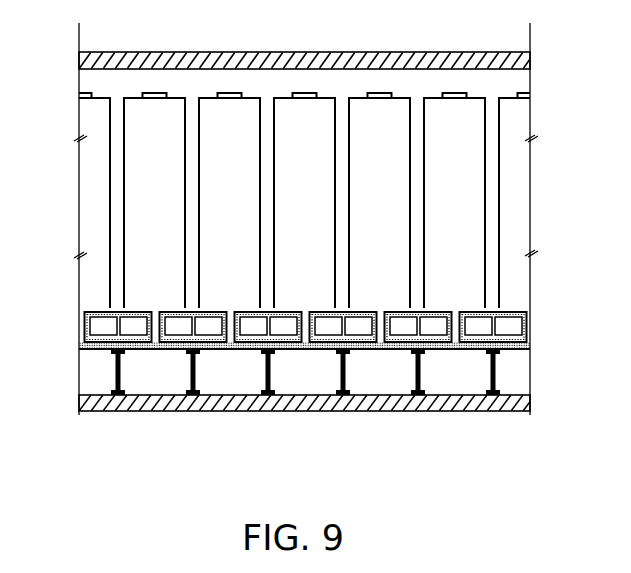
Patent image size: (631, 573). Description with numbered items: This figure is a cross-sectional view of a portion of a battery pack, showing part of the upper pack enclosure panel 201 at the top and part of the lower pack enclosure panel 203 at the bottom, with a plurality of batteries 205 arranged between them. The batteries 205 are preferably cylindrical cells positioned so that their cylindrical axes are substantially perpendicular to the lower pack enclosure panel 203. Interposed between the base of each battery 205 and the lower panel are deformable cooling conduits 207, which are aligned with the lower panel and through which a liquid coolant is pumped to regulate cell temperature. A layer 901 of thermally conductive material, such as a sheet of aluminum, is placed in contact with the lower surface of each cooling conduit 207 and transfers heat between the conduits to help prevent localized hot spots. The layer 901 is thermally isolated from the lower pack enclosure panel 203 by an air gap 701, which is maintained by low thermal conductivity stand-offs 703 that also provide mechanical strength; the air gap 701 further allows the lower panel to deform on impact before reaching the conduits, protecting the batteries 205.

The upper pack enclosure panel 201 is at (202, 60).
The lower pack enclosure panel 203 is at (353, 413).
The batteries 205 is at (134, 208).
The cooling conduits 207 is at (182, 350).
The layer of thermally conductive material 901 is at (530, 345).
The stand-offs 703 is at (340, 373).
The air gap 701 is at (445, 350).